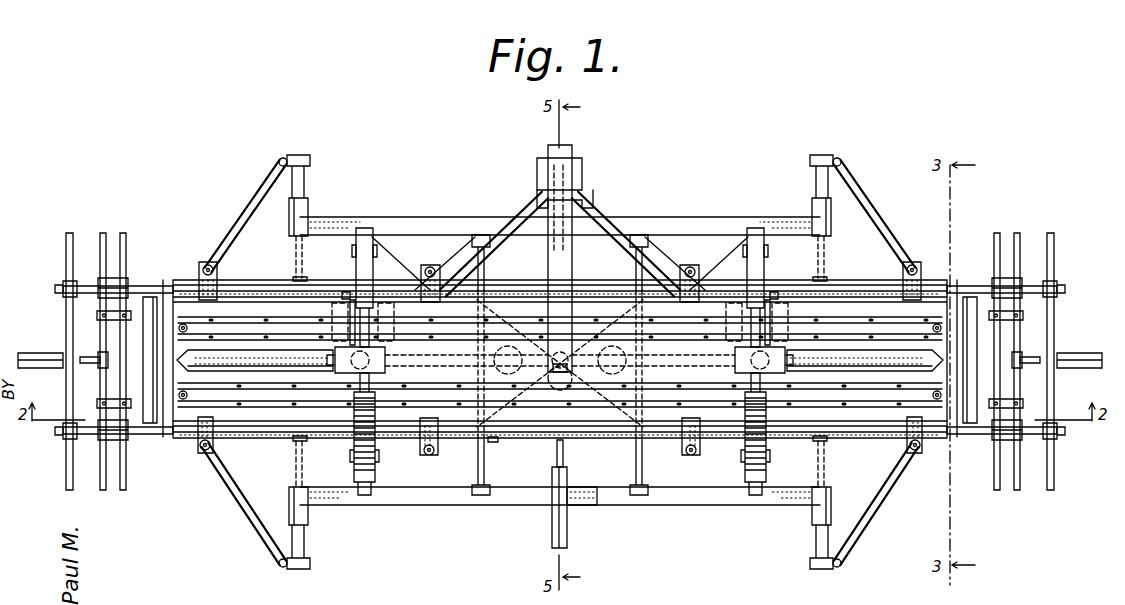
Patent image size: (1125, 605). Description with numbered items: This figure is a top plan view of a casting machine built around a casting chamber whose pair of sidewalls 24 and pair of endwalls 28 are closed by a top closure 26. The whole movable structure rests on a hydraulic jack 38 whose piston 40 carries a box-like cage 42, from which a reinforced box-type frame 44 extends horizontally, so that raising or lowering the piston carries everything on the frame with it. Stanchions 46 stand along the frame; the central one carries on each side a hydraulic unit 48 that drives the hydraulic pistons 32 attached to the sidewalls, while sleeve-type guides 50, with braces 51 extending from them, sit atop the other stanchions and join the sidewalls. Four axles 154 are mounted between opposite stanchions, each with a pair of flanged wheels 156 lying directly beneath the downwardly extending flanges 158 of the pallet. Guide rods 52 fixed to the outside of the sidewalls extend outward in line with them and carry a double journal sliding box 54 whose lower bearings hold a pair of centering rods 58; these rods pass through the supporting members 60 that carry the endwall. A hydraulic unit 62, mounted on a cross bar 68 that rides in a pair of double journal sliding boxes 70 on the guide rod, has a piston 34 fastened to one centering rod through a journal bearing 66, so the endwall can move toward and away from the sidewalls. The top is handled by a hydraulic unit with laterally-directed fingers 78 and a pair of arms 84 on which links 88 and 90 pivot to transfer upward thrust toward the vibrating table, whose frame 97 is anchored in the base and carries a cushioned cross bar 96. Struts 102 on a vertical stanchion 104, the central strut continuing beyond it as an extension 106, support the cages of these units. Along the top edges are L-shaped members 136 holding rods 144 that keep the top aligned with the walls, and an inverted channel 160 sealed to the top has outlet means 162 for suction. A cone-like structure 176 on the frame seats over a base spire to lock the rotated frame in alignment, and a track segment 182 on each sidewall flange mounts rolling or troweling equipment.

The sidewalls 24 is at (514, 284).
The top closure 26 is at (270, 306).
The endwalls 28 is at (973, 298).
The hydraulic pistons 32 is at (564, 452).
The piston 34 is at (1034, 358).
The hydraulic jack 38 is at (548, 390).
The piston 40 is at (559, 344).
The box-like cage 42 is at (555, 388).
The reinforced box-type frame 44 is at (470, 494).
The stanchions 46 is at (570, 506).
The hydraulic unit 48 is at (548, 250).
The sleeve-type guides 50 is at (810, 542).
The braces 51 is at (868, 532).
The guide rods 52 is at (977, 438).
The double journal sliding box 54 is at (1022, 442).
The centering rods 58 is at (1020, 330).
The supporting members 60 is at (1024, 408).
The hydraulic unit 62 is at (1084, 358).
The journal bearing 66 is at (1026, 368).
The cross bar 68 is at (1052, 382).
The double journal sliding boxes 70 is at (1064, 442).
The fingers 78 is at (347, 370).
The arms 84 is at (774, 434).
The link 88 is at (757, 497).
The link 90 is at (742, 393).
The cross bar 96 is at (772, 468).
The frame 97 is at (788, 418).
The struts 102 is at (578, 260).
The vertical stanchion 104 is at (584, 198).
The strut extension 106 is at (572, 160).
The L-shaped member 136 is at (925, 456).
The rod 144 is at (696, 458).
The axle 154 is at (852, 438).
The flanged wheels 156 is at (824, 281).
The flanges 158 is at (494, 443).
The inverted channel 160 is at (892, 404).
The outlet means 162 is at (949, 396).
The cone-like structure 176 is at (564, 396).
The track segment 182 is at (580, 440).